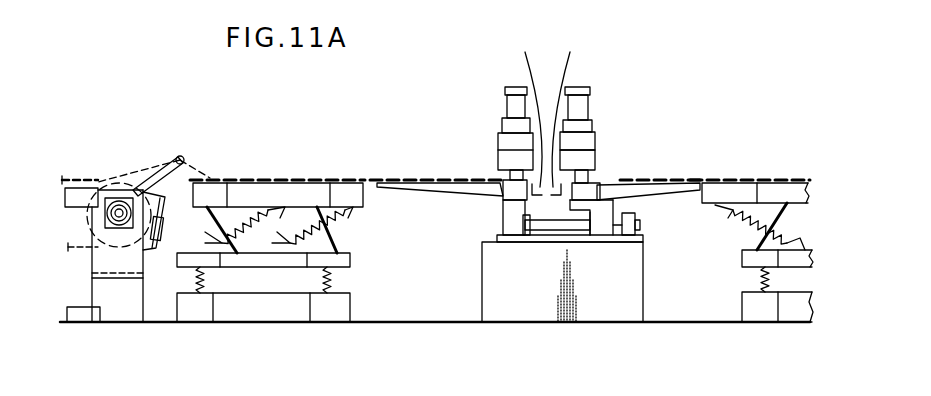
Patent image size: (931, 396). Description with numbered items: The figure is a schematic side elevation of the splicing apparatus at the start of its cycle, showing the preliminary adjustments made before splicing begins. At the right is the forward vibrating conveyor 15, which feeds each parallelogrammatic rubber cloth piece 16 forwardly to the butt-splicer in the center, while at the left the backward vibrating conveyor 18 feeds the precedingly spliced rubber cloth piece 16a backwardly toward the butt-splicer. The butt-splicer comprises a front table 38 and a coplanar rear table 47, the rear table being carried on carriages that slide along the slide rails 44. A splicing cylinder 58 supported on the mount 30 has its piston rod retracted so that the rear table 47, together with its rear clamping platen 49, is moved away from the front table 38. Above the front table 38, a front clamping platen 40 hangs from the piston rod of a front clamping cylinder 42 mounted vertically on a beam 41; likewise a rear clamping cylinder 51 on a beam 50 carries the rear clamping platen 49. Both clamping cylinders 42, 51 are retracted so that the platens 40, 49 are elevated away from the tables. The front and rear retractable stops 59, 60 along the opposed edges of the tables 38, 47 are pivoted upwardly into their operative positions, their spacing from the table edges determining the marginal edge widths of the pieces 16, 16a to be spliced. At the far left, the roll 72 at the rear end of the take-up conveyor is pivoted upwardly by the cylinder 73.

The forward vibrating conveyor 15 is at (778, 188).
The rubber cloth piece 16 is at (710, 178).
The precedingly spliced rubber cloth piece 16a is at (360, 180).
The backward vibrating conveyor 18 is at (287, 193).
The mount 30 is at (492, 285).
The front table 38 is at (458, 197).
The front clamping platen 40 is at (507, 162).
The beam 41 is at (503, 140).
The front clamping cylinder 42 is at (512, 108).
The slide rails 44 is at (548, 223).
The rear table 47 is at (640, 192).
The rear clamping platen 49 is at (583, 162).
The beam 50 is at (580, 143).
The rear clamping cylinder 51 is at (580, 110).
The splicing cylinder 58 is at (627, 233).
The front retractable stop 59 is at (526, 109).
The rear retractable stop 60 is at (573, 109).
The roll 72 is at (180, 155).
The cylinder 73 is at (163, 225).